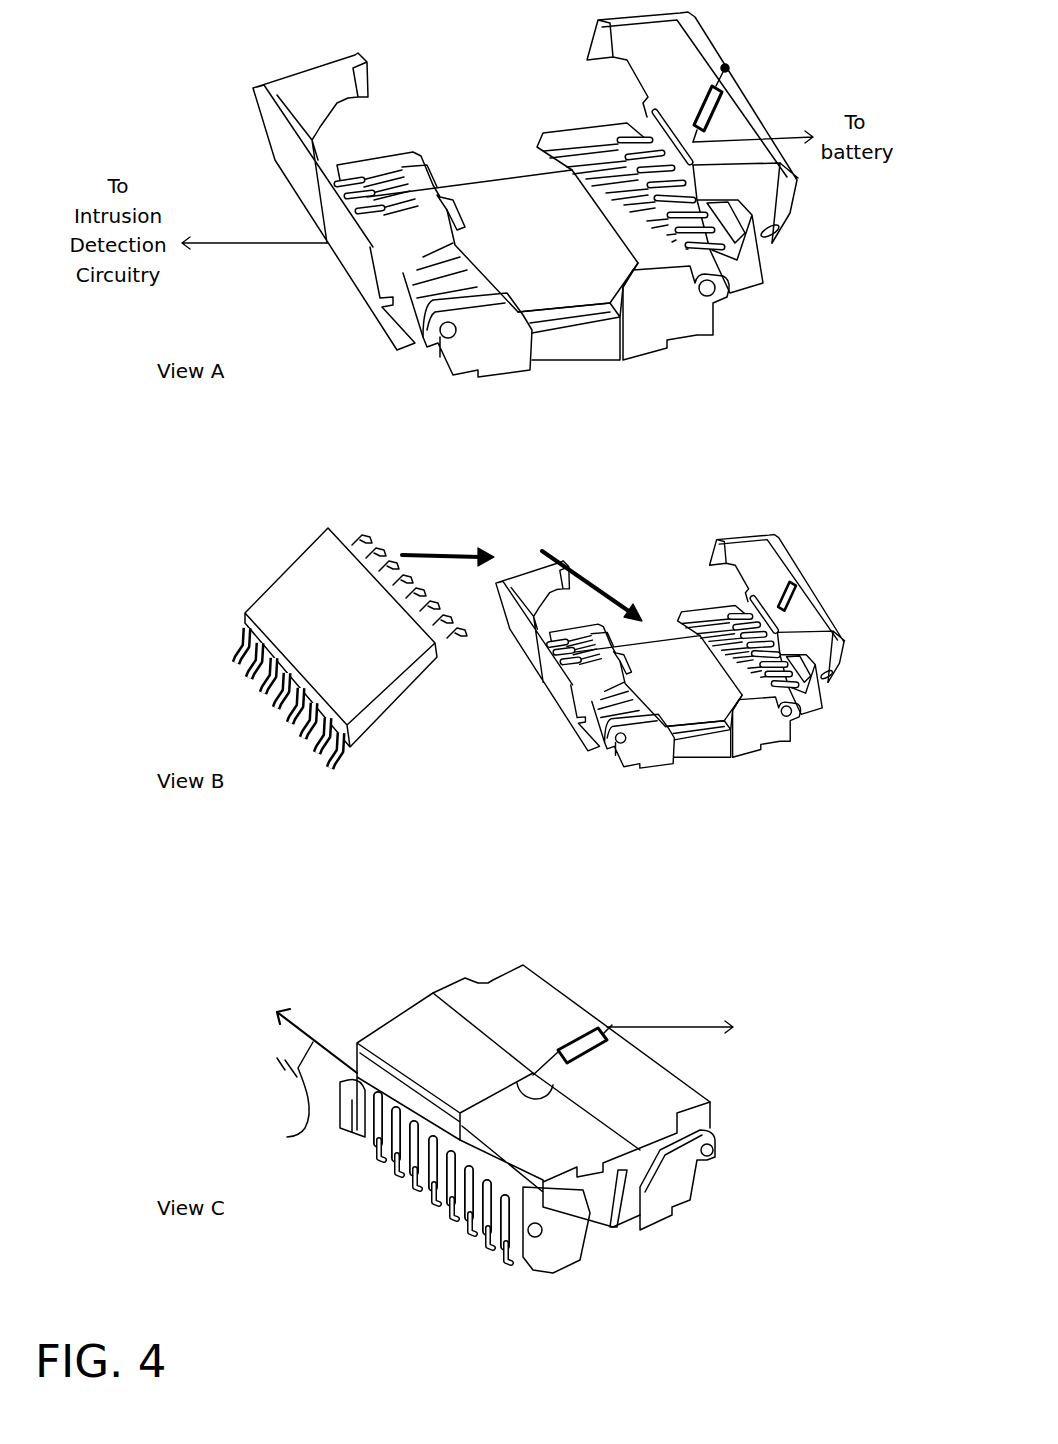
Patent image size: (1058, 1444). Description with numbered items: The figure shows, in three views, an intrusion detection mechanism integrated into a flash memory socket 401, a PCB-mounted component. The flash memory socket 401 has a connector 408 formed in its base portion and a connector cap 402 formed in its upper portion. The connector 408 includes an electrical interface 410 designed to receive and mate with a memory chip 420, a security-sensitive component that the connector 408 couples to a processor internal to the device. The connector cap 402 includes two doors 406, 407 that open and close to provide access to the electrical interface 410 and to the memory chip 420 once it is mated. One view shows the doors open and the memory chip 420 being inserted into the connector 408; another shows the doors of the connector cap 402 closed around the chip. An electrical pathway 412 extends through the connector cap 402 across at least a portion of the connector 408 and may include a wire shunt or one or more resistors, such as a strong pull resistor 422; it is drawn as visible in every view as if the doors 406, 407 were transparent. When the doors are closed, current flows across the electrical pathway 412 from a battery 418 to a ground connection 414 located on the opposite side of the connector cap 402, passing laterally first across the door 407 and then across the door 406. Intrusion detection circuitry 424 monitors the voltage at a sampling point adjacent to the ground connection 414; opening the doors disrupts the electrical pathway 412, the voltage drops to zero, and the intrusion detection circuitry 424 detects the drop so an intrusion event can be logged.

The flash memory socket 401 is at (207, 79).
The connector cap 402 is at (272, 155).
The door 406 is at (348, 258).
The door 407 is at (690, 57).
The connector 408 is at (567, 345).
The electrical interface 410 is at (705, 247).
The electrical pathway 412 is at (553, 1087).
The ground connection 414 is at (276, 1095).
The battery 418 is at (759, 1081).
The memory chip 420 is at (298, 567).
The strong pull resistor 422 is at (610, 1025).
The intrusion detection circuitry 424 is at (209, 1064).